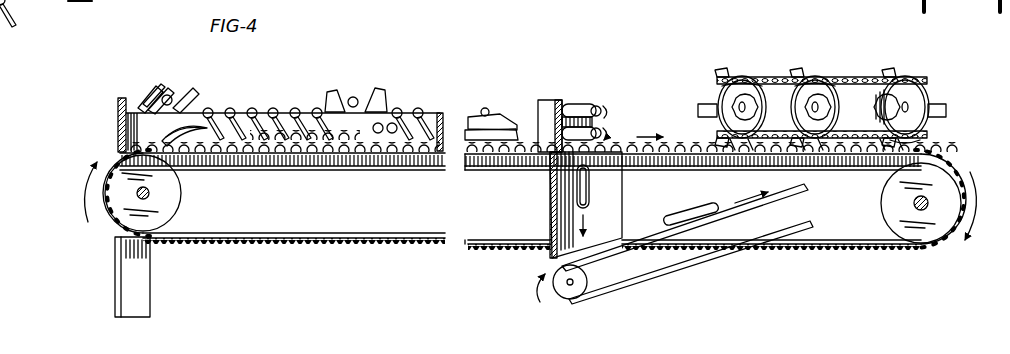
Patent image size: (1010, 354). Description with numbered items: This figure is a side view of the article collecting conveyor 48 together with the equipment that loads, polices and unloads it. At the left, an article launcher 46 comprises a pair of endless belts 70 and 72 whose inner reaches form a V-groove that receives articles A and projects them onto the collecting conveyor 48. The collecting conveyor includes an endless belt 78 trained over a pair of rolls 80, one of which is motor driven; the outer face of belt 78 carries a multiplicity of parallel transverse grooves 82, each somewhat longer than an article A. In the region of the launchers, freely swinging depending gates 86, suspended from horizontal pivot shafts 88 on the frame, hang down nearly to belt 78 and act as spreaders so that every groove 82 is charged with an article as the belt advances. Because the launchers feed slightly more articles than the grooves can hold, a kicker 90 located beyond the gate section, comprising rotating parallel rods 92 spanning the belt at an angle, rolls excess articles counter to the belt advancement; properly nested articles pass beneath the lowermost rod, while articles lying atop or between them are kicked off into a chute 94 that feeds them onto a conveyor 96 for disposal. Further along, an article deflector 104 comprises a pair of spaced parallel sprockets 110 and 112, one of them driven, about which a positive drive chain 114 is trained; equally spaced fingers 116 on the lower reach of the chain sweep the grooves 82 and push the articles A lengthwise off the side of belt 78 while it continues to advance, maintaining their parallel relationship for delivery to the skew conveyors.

The article launcher 46 is at (133, 95).
The collecting conveyor 48 is at (115, 127).
The endless belt 70 is at (188, 98).
The endless belt 72 is at (148, 92).
The endless belt 78 is at (172, 241).
The roll 80 is at (172, 206).
The transverse groove 82 is at (506, 166).
The depending gate 86 is at (253, 110).
The horizontal pivot shaft 88 is at (487, 110).
The kicker 90 is at (546, 102).
The rotating rod 92 is at (596, 108).
The chute 94 is at (549, 216).
The conveyor 96 is at (660, 244).
The article deflector 104 is at (743, 70).
The sprocket 110 is at (720, 100).
The sprocket 112 is at (915, 92).
The chain 114 is at (713, 97).
The finger 116 is at (728, 86).
The article A is at (167, 96).